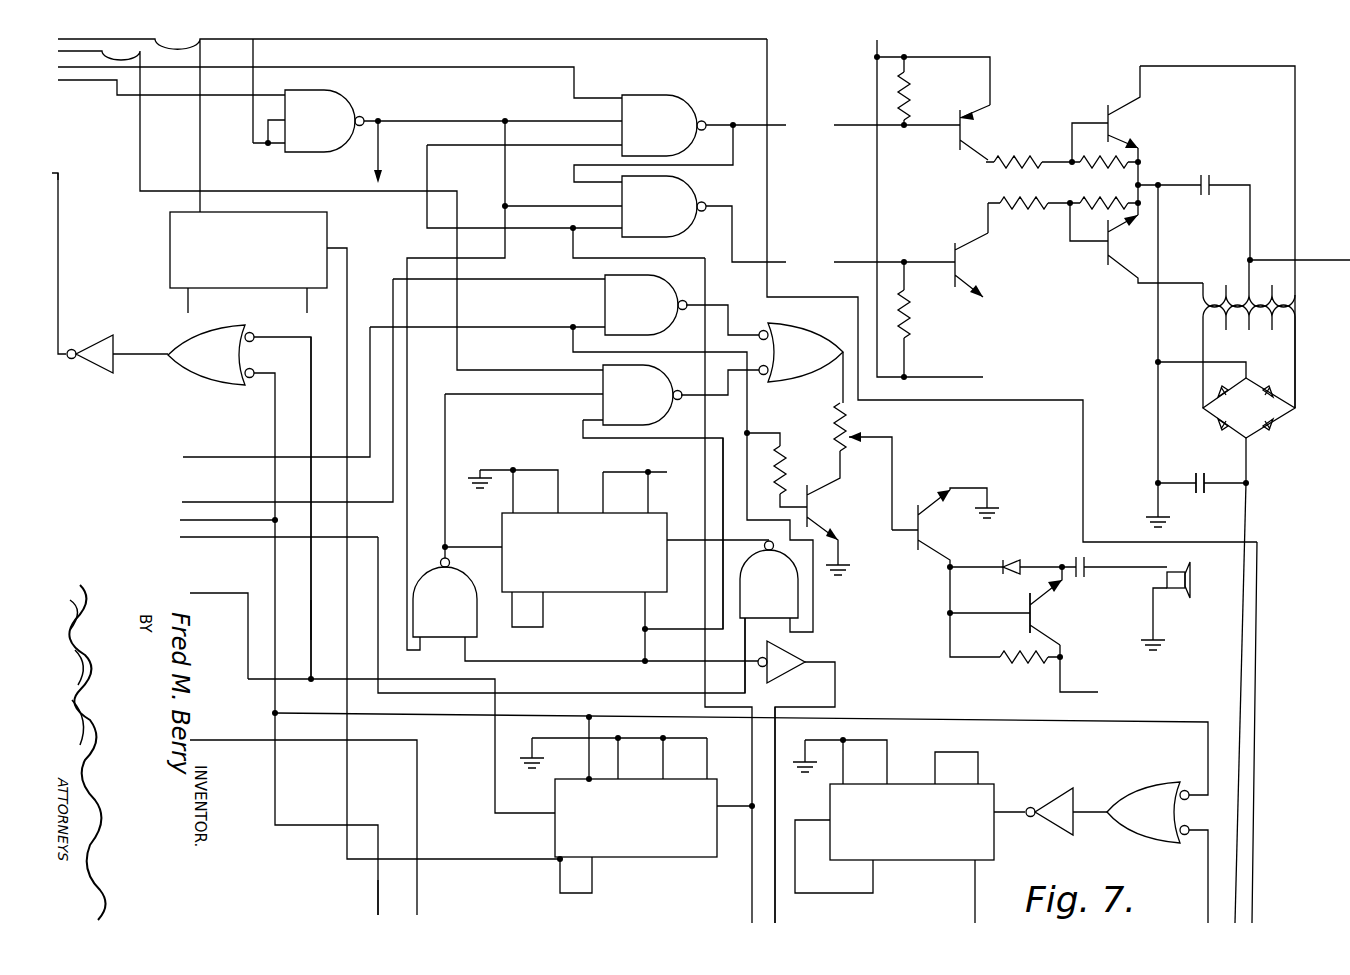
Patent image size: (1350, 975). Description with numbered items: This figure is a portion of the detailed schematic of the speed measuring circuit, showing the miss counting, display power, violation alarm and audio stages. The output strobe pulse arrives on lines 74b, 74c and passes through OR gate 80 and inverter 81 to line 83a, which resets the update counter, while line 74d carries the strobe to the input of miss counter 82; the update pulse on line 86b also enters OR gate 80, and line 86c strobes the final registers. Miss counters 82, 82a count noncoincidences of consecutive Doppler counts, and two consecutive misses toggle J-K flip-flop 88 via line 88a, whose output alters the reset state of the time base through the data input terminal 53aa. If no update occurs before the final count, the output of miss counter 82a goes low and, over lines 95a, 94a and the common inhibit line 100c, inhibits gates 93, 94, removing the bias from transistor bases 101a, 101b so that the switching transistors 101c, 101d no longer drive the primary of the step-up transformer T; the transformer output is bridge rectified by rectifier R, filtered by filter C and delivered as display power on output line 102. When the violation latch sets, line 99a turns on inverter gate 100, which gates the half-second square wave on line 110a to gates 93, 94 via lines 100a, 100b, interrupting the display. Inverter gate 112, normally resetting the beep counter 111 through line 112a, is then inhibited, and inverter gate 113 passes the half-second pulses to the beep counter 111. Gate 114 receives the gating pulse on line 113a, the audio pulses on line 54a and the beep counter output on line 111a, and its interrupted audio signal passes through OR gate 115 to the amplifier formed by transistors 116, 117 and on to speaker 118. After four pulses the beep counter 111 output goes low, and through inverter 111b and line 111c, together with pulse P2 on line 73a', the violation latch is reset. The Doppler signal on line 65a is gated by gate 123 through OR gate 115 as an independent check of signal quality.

The data input terminal 53aa is at (200, 44).
The line 99a is at (256, 53).
The line 54a is at (140, 56).
The line 110a is at (100, 86).
The inverter gate 100 is at (324, 121).
The line 100a is at (540, 118).
The line 100b is at (563, 208).
The common inhibit line 100c is at (505, 152).
The gate 93 is at (664, 125).
The gate 94 is at (664, 206).
The line 94a is at (688, 258).
The J-K flip-flop 88 is at (248, 262).
The line 88a is at (357, 260).
The line 83a is at (62, 178).
The OR gate 80 is at (183, 355).
The inverter 81 is at (100, 372).
The line 65a is at (528, 282).
The gate 123 is at (646, 305).
The gate 114 is at (642, 395).
The OR gate 115 is at (801, 352).
The line 113a is at (492, 402).
The inverter gate 113 is at (457, 515).
The beep counter 111 is at (584, 552).
The line 111a is at (723, 605).
The inverter gate 112 is at (769, 579).
The line 112a is at (200, 537).
The inverter 111b is at (787, 650).
The line 111c is at (835, 688).
The transistor 116 is at (905, 540).
The transistor 117 is at (1040, 615).
The speaker 118 is at (1172, 590).
The transistor base 101a is at (948, 142).
The transistor base 101b is at (945, 257).
The switching transistor 101c is at (1108, 125).
The transistor 101d is at (1108, 246).
The step-up transformer T is at (1296, 312).
The rectifier R is at (1268, 420).
The filter C is at (1212, 478).
The output line 102 is at (1243, 515).
The line 86b is at (220, 520).
The line 74b is at (198, 593).
The line 74c is at (311, 622).
The line 74d is at (495, 770).
The line 73a' is at (328, 813).
The line 86c is at (378, 905).
The miss counter 82 is at (636, 818).
The miss counter 82a is at (1009, 821).
The line 95a is at (975, 898).